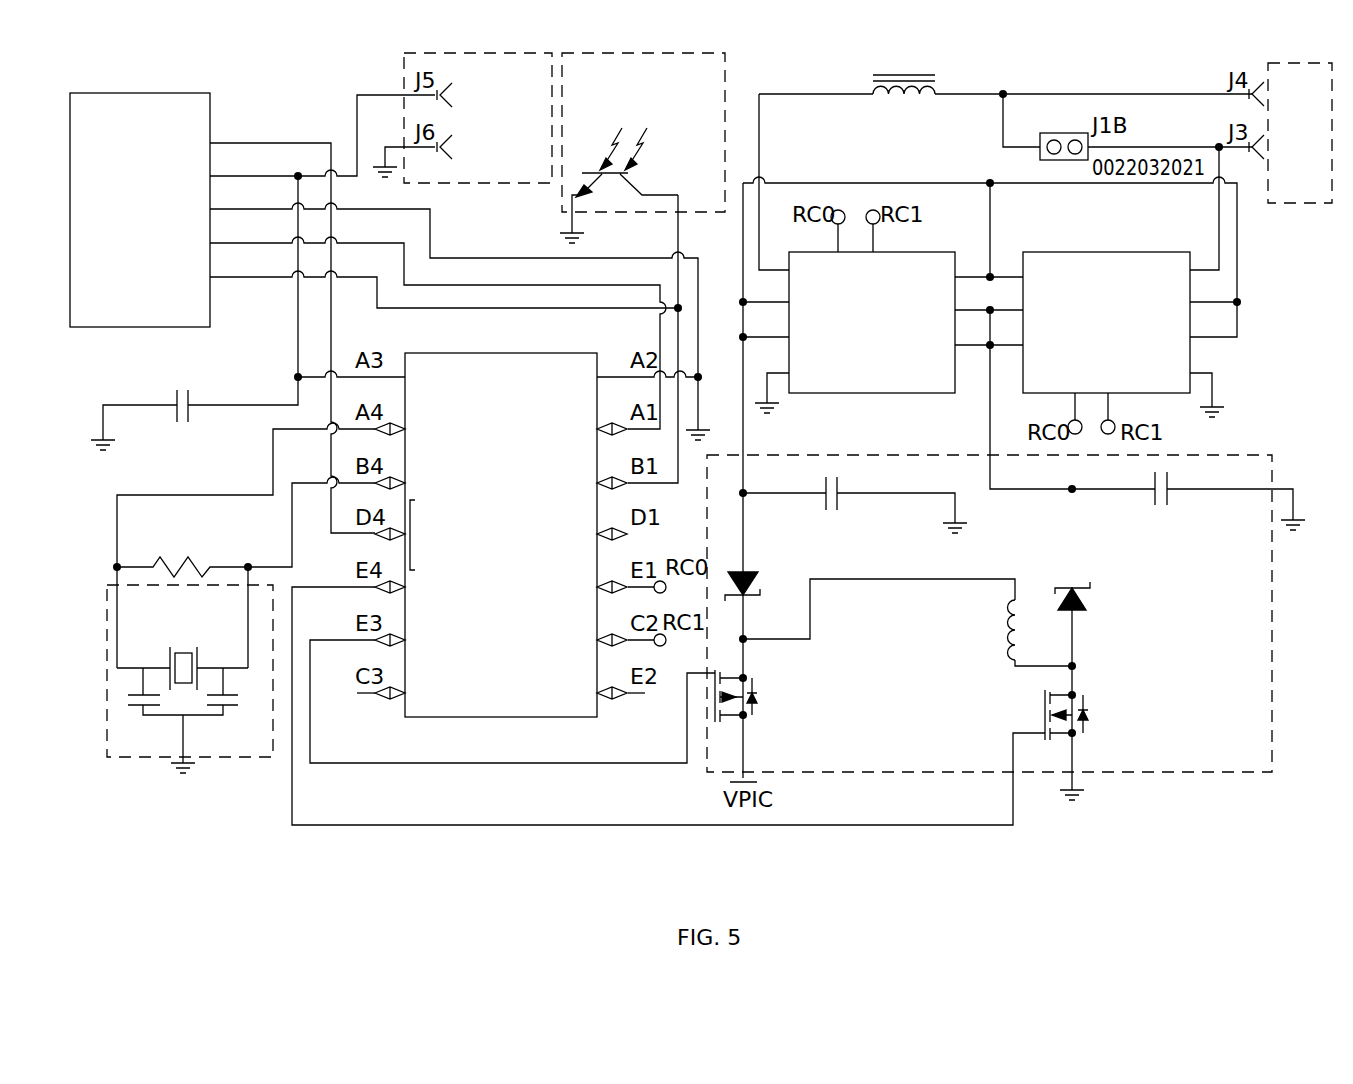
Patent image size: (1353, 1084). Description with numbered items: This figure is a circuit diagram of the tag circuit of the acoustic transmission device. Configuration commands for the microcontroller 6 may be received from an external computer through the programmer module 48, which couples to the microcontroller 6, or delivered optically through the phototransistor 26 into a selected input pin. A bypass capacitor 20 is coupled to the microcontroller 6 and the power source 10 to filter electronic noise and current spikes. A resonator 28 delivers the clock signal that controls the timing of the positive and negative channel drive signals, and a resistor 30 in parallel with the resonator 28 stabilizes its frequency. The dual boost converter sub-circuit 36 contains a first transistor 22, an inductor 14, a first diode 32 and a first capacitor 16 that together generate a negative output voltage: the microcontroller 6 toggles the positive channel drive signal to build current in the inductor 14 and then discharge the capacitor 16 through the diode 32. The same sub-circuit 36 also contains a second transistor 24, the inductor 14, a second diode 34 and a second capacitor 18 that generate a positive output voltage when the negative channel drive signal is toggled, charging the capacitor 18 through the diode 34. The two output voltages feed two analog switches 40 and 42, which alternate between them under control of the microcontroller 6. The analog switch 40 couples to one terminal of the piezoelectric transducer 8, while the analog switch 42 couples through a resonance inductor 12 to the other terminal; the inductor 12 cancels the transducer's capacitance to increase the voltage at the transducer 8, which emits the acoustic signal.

The programmer module 48 is at (152, 318).
The power source 10 is at (542, 163).
The phototransistor 26 is at (713, 90).
The bypass capacitor 20 is at (190, 392).
The resistor 30 is at (208, 560).
The resonator 28 is at (262, 745).
The microcontroller 6 is at (506, 705).
The resonance inductor 12 is at (920, 95).
The analog switch 42 is at (888, 377).
The analog switch 40 is at (1122, 295).
The piezoelectric transducer 8 is at (1310, 188).
The dual boost converter sub-circuit 36 is at (1260, 762).
The first capacitor 16 is at (826, 500).
The second capacitor 18 is at (1155, 495).
The first diode 32 is at (750, 600).
The second diode 34 is at (1080, 610).
The first transistor 22 is at (750, 718).
The second transistor 24 is at (1083, 736).
The inductor 14 is at (1012, 664).